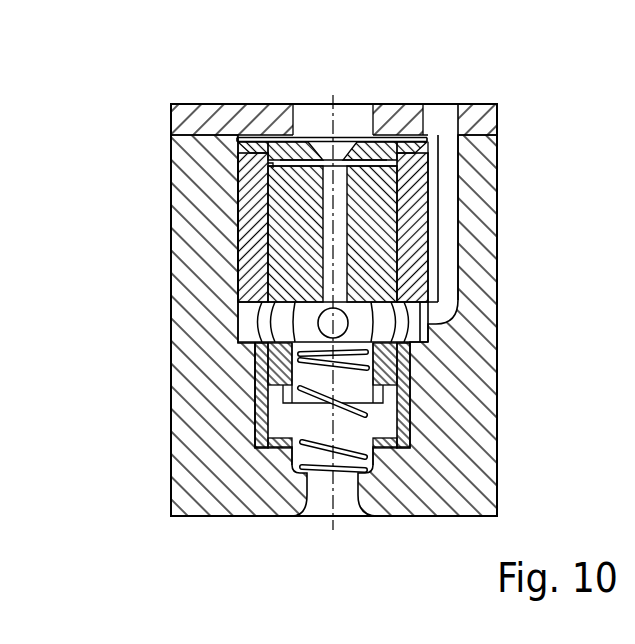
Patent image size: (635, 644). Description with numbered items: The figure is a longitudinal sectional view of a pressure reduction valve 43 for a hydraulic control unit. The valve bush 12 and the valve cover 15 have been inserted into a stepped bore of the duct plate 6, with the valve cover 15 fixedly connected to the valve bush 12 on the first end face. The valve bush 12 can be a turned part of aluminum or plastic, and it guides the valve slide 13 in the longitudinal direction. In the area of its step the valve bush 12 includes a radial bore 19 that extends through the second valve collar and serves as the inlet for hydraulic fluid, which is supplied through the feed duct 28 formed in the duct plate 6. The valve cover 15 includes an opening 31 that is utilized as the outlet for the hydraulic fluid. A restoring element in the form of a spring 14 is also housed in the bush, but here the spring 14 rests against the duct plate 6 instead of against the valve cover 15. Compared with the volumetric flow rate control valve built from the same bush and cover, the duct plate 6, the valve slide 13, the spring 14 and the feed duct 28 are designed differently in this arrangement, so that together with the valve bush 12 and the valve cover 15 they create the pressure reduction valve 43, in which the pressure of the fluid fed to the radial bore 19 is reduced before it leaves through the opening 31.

The duct plate 6 is at (203, 163).
The valve bush 12 is at (257, 243).
The valve slide 13 is at (295, 190).
The spring 14 is at (368, 417).
The valve cover 15 is at (387, 150).
The radial bore 19 is at (400, 322).
The feed duct 28 is at (448, 258).
The opening 31 is at (323, 152).
The pressure reduction valve 43 is at (162, 313).